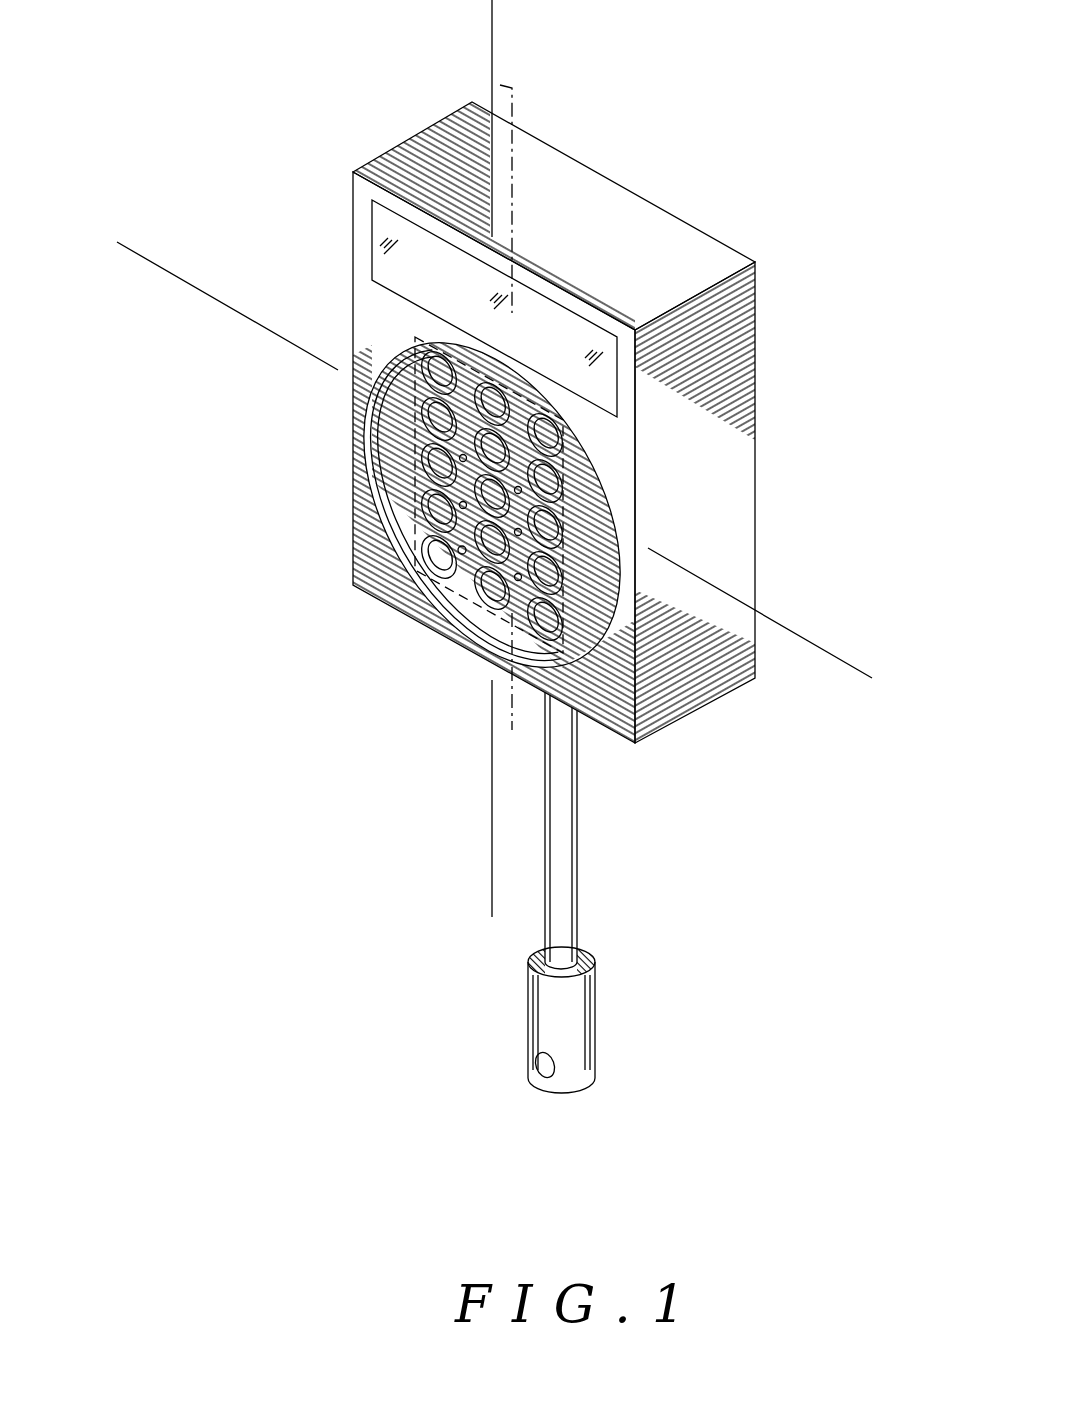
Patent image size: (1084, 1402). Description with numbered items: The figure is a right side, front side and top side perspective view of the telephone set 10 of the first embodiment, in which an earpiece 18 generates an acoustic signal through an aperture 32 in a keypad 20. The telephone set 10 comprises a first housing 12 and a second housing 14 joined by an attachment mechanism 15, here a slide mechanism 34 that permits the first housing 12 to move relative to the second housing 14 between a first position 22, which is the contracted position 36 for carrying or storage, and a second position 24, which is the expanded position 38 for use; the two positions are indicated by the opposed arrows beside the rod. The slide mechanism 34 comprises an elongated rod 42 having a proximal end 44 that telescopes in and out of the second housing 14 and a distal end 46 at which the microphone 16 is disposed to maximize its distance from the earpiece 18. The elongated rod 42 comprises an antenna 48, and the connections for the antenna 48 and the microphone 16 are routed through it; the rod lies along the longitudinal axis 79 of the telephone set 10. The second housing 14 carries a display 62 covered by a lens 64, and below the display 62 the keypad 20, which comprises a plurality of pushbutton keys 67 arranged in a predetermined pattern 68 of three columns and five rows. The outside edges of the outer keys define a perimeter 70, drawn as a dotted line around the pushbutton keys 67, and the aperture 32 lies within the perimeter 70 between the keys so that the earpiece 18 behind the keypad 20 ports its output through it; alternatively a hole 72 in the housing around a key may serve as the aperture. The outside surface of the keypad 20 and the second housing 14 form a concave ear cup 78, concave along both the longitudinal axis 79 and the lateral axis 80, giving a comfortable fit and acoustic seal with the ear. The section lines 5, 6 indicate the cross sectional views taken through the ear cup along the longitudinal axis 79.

The telephone set 10 is at (794, 1153).
The second housing 14 is at (745, 492).
The microphone 16 is at (537, 1073).
The earpiece 18 is at (410, 456).
The keypad 20 is at (411, 432).
The aperture 32 is at (462, 555).
The proximal end 44 is at (573, 710).
The distal end 46 is at (527, 1020).
The antenna 48 is at (578, 912).
The display 62 is at (380, 222).
The lens 64 is at (578, 340).
The pushbutton keys 67 is at (553, 573).
The predetermined pattern 68 is at (574, 505).
The perimeter 70 is at (567, 443).
The hole 72 is at (423, 500).
The concave ear cup 78 is at (600, 580).
The longitudinal axis 79 is at (493, 22).
The lateral axis 80 is at (160, 265).
The attachment mechanism 15 is at (450, 785).
The slide mechanism 34 is at (519, 758).
The first position 22 is at (660, 801).
The contracted position 36 is at (607, 793).
The second position 24 is at (660, 859).
The expanded position 38 is at (607, 840).
The first housing 12 is at (407, 961).
The elongated rod 42 is at (476, 933).
The section line 5 is at (469, 378).
The section line 6 is at (510, 92).